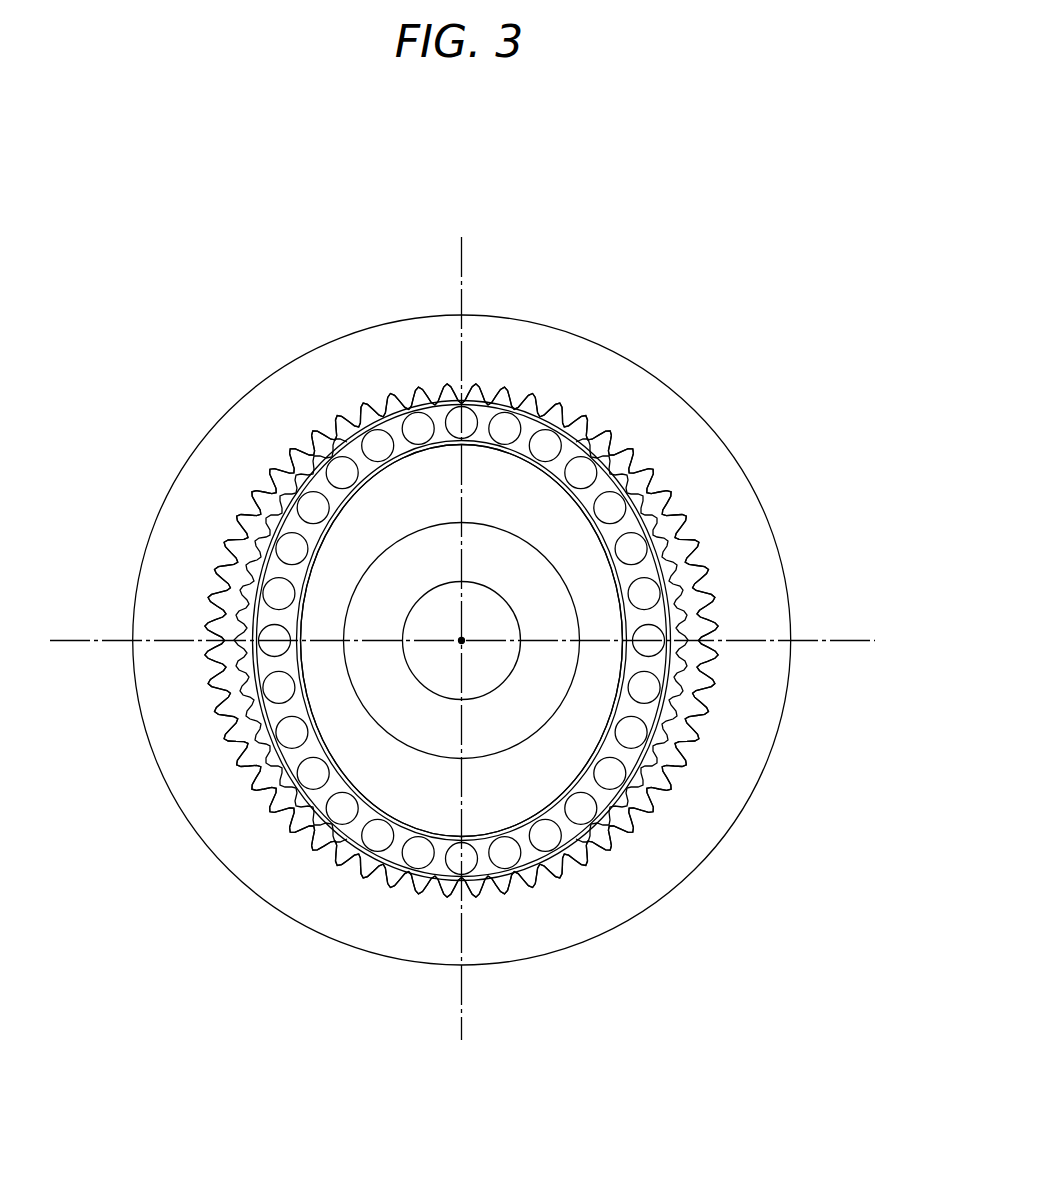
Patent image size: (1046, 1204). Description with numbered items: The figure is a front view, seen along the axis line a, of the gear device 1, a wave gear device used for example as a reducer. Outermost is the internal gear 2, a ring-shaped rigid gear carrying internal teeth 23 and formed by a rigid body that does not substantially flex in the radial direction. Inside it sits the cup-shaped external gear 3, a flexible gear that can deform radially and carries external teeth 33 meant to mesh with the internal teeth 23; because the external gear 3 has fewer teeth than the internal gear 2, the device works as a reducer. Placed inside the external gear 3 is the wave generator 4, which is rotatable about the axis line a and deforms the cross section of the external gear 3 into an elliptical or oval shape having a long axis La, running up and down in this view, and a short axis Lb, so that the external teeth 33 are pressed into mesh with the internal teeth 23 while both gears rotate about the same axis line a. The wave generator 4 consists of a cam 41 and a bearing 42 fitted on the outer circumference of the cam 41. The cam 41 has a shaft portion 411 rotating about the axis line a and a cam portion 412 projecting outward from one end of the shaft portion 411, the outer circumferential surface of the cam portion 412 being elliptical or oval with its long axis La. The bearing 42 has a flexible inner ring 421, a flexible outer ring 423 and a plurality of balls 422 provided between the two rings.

The gear device 1 is at (697, 182).
The internal gear 2 is at (660, 373).
The internal teeth 23 is at (703, 715).
The external gear 3 is at (700, 601).
The external teeth 33 is at (677, 745).
The wave generator 4 is at (362, 880).
The cam 41 is at (93, 806).
The shaft portion 411 is at (373, 719).
The cam portion 412 is at (383, 772).
The bearing 42 is at (705, 955).
The inner ring 421 is at (585, 851).
The balls 422 is at (553, 865).
The outer ring 423 is at (537, 897).
The axis line a is at (459, 637).
The long axis La is at (463, 278).
The short axis Lb is at (836, 645).